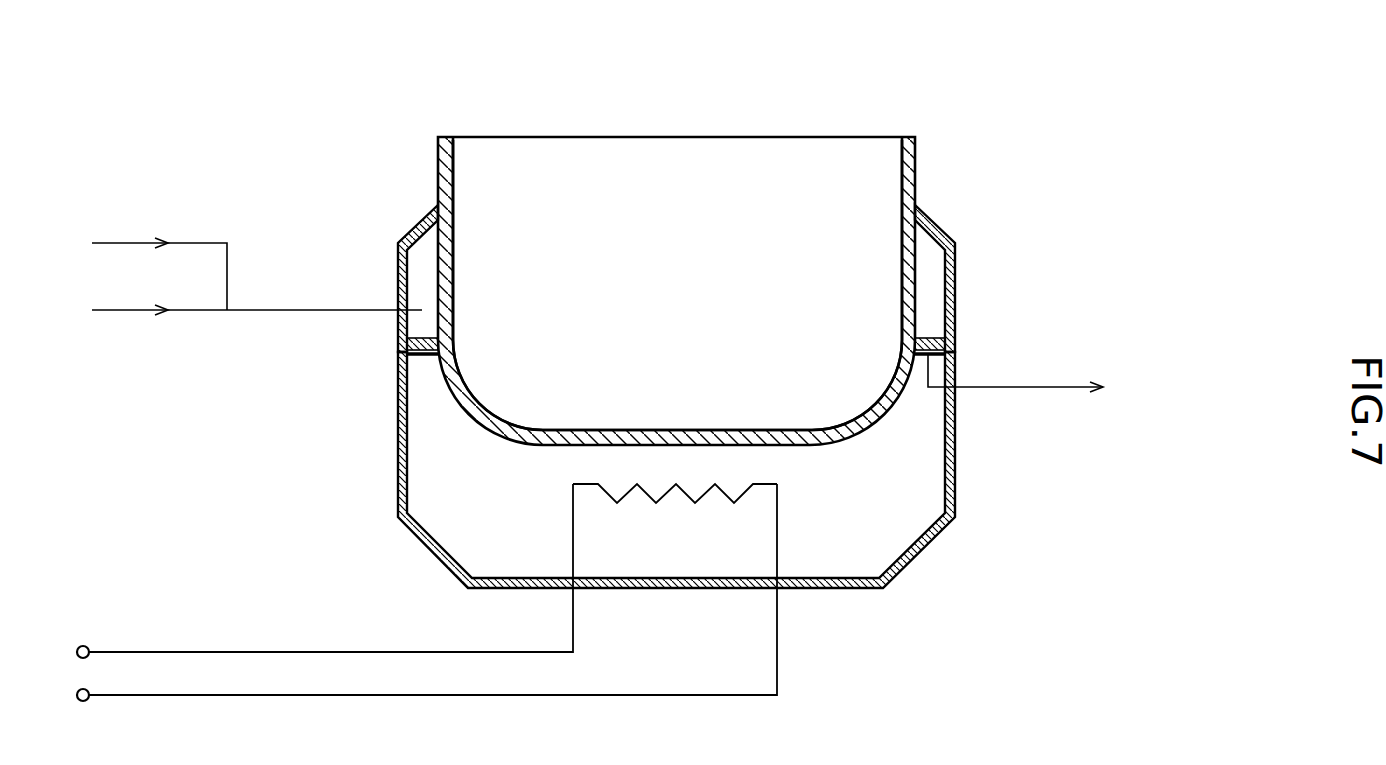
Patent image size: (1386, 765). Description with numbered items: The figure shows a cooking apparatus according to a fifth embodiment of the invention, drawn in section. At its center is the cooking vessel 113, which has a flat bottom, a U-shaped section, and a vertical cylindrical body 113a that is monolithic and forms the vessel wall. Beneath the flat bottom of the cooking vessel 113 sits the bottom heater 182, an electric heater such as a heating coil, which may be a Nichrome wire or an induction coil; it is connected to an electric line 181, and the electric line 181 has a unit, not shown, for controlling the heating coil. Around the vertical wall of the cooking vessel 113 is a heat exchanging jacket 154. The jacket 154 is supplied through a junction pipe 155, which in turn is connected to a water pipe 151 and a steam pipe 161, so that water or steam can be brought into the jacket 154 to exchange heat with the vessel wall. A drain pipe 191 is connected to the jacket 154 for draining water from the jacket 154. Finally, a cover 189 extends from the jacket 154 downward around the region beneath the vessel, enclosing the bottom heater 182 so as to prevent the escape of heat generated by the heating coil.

The cooking vessel 113 is at (701, 136).
The vertical cylindrical body 113a is at (454, 183).
The heat exchanging jacket 154 is at (412, 230).
The cover 189 is at (956, 445).
The water pipe 151 is at (118, 243).
The steam pipe 161 is at (118, 310).
The junction pipe 155 is at (280, 310).
The drain pipe 191 is at (1032, 386).
The bottom heater 182 is at (706, 495).
The electric line 181 is at (157, 652).